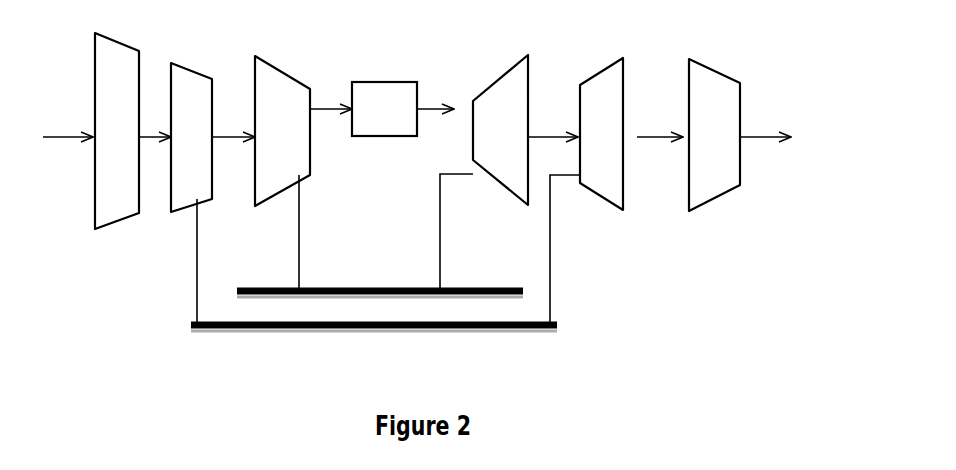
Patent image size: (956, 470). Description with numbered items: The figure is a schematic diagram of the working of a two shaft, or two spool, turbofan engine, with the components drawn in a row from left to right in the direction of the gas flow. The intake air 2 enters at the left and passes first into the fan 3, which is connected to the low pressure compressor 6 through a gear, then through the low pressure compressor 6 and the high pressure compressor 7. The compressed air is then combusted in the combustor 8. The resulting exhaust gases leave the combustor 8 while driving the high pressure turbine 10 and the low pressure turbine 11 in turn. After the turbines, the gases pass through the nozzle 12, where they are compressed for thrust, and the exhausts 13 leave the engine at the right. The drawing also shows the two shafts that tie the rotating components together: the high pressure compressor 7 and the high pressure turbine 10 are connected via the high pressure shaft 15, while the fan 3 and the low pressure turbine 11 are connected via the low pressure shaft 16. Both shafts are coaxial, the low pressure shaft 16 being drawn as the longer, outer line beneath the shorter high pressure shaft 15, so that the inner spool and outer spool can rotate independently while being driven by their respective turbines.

The intake air 2 is at (68, 121).
The fan 3 is at (133, 131).
The low pressure compressor 6 is at (213, 137).
The high pressure compressor 7 is at (303, 131).
The combustor 8 is at (403, 109).
The high pressure turbine 10 is at (525, 130).
The low pressure turbine 11 is at (631, 134).
The nozzle 12 is at (714, 135).
The exhausts 13 is at (774, 122).
The high pressure shaft 15 is at (380, 235).
The low pressure shaft 16 is at (385, 272).